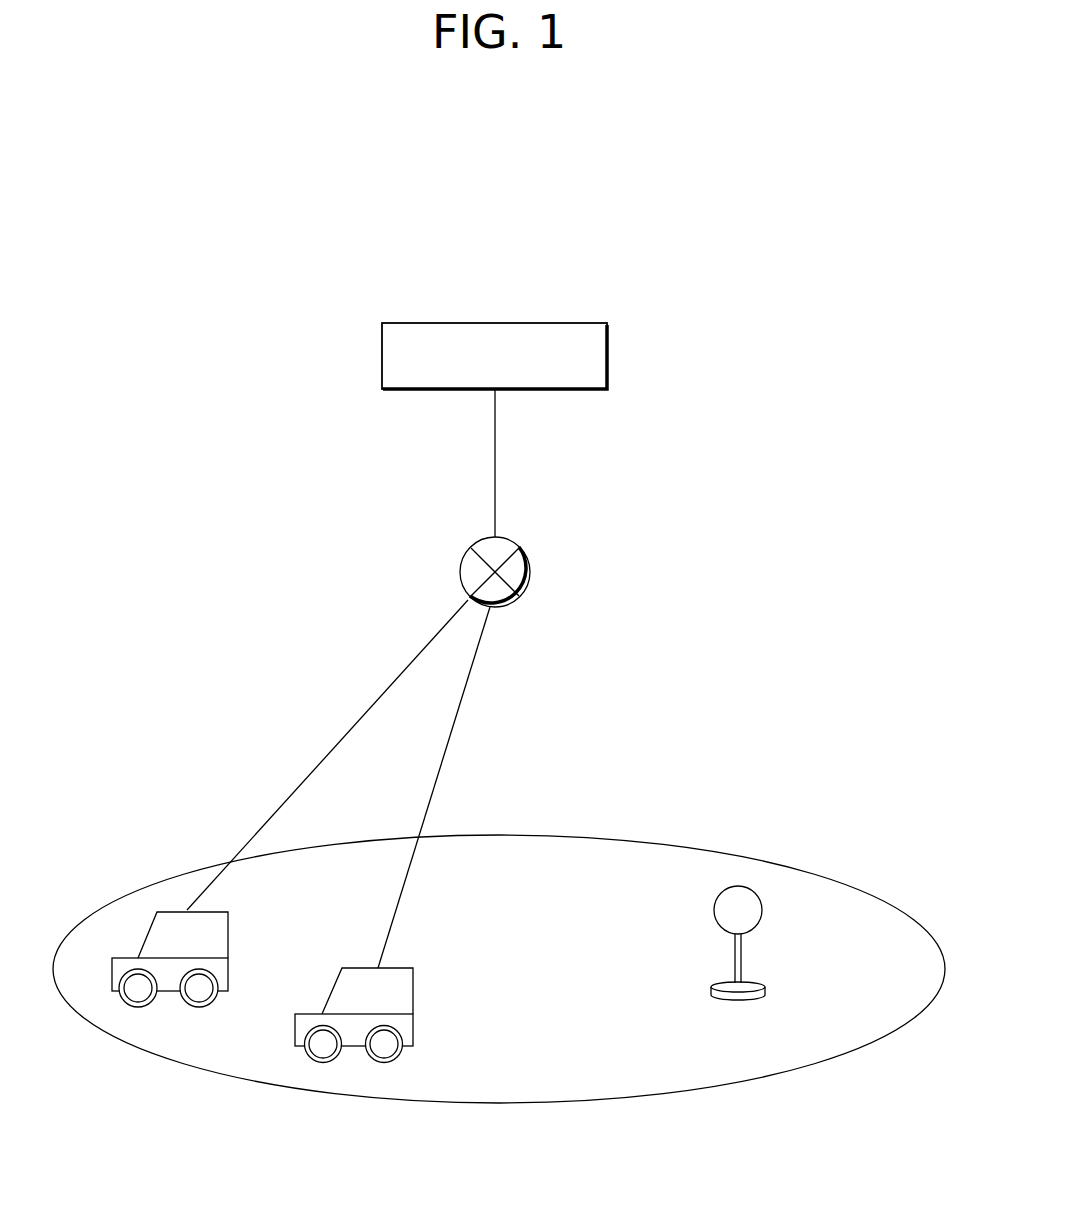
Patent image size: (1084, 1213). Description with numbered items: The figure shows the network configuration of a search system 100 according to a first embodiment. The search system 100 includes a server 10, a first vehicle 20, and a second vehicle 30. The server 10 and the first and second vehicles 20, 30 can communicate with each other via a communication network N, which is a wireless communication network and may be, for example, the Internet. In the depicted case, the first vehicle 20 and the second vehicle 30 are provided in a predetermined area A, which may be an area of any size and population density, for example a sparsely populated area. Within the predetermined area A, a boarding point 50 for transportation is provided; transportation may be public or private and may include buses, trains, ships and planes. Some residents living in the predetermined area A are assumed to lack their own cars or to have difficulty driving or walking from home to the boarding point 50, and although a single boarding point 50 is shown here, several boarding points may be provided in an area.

The search system 100 is at (690, 218).
The server 10 is at (608, 352).
The communication network N is at (517, 543).
The predetermined area A is at (190, 856).
The first vehicle 20 is at (228, 925).
The second vehicle 30 is at (413, 990).
The boarding point 50 is at (762, 915).